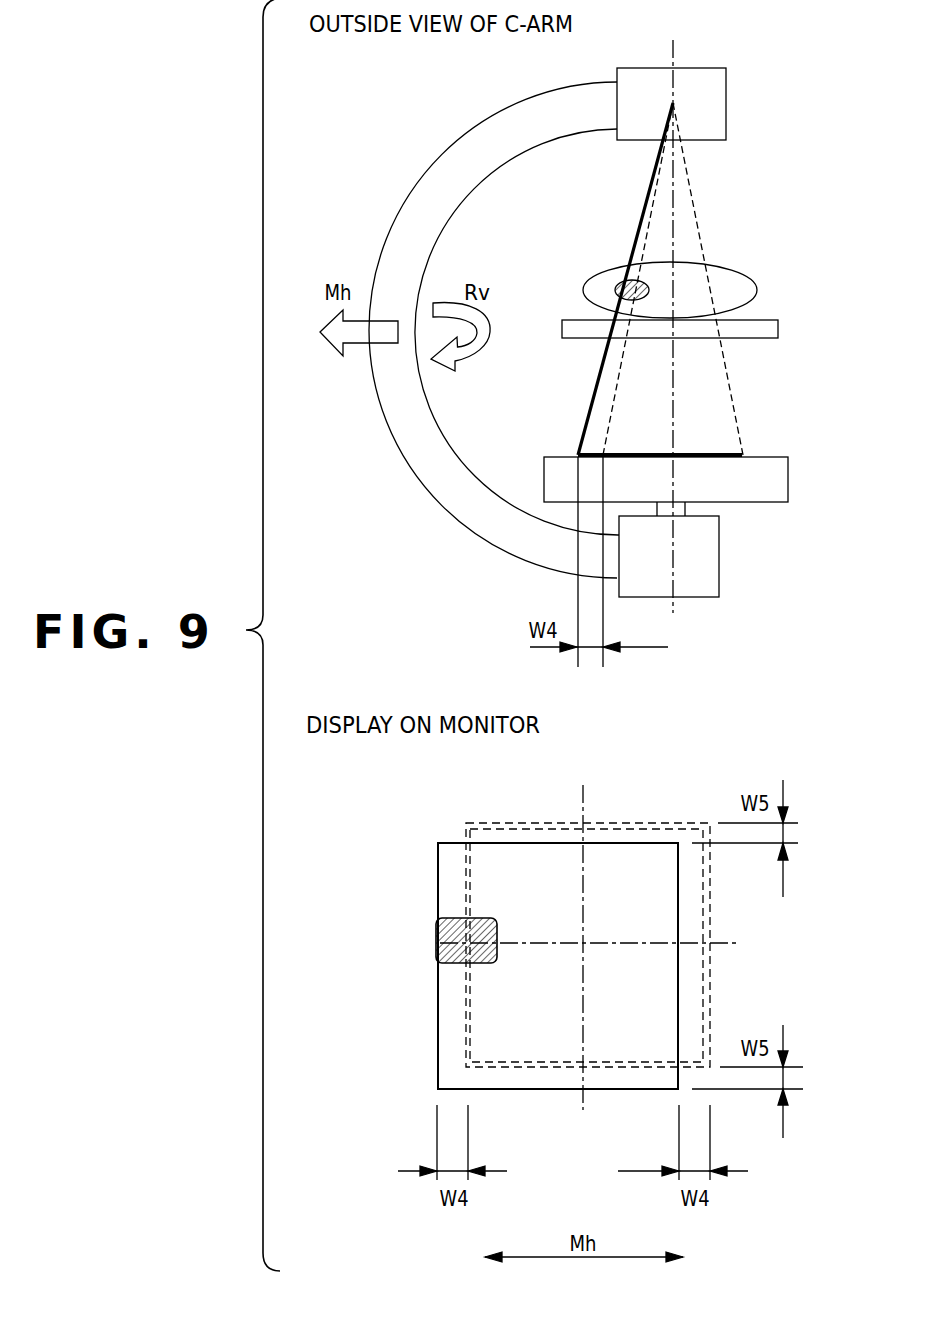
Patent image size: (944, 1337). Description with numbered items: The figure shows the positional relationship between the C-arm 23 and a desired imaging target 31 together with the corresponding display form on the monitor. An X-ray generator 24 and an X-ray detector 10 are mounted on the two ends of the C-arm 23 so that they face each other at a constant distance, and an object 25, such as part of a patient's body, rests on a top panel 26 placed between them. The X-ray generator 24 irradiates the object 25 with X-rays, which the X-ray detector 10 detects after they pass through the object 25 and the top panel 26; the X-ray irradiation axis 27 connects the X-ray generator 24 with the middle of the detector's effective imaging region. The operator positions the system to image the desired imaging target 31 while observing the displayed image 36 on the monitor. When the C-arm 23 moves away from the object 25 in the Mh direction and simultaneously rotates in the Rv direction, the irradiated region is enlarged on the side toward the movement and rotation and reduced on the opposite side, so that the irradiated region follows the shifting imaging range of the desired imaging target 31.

The X-ray detector 10 is at (775, 480).
The C-arm 23 is at (490, 143).
The X-ray generator 24 is at (712, 106).
The object 25 is at (742, 266).
The top panel 26 is at (775, 326).
The X-ray irradiation axis 27 is at (702, 556).
The desired imaging target 31 is at (622, 280).
The display image 36 is at (529, 1102).